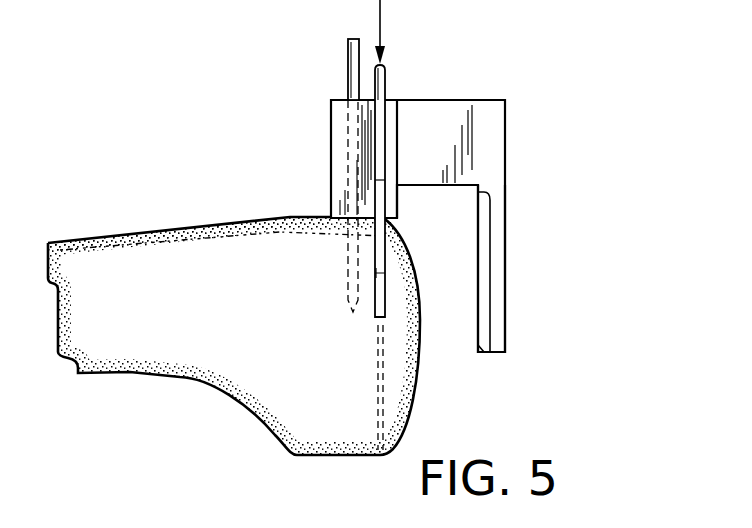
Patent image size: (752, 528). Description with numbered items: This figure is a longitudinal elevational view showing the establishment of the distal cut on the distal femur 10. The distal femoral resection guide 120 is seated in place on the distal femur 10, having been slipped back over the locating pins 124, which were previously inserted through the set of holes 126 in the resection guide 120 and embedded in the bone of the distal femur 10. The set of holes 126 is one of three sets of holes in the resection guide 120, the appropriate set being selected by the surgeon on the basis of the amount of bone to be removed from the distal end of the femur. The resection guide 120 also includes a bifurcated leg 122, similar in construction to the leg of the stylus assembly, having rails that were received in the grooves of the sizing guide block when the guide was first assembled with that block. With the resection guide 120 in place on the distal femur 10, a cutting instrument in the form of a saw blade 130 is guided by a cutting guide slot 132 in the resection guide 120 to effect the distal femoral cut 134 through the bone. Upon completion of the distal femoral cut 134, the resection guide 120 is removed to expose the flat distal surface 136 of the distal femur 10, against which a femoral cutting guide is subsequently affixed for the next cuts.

The distal femur 10 is at (181, 378).
The distal femoral resection guide 120 is at (473, 95).
The bifurcated leg 122 is at (507, 190).
The locating pins 124 is at (347, 62).
The set of holes 126 is at (346, 138).
The saw blade 130 is at (386, 78).
The cutting guide slot 132 is at (377, 147).
The distal femoral cut 134 is at (420, 391).
The flat distal surface 136 is at (378, 295).